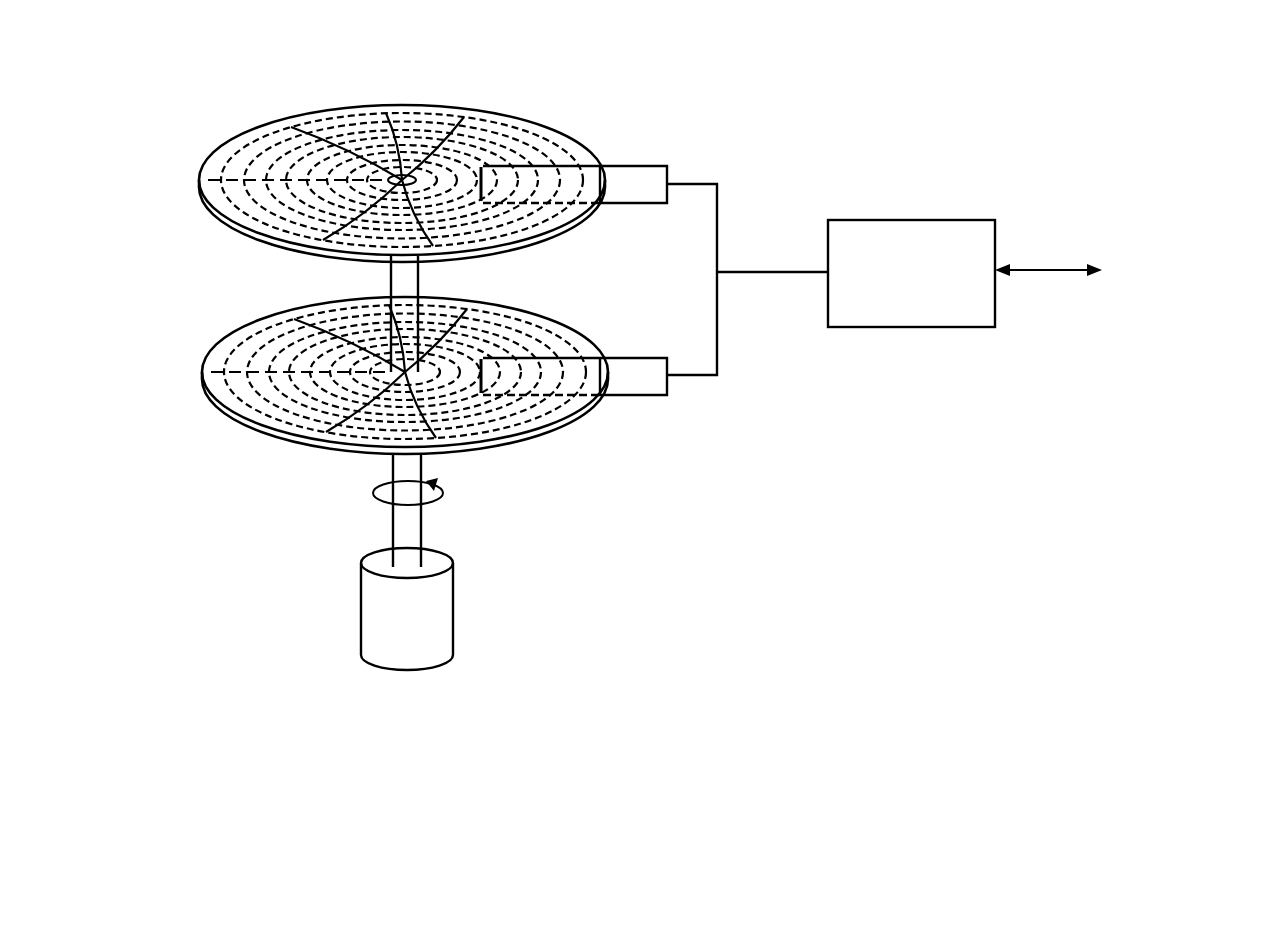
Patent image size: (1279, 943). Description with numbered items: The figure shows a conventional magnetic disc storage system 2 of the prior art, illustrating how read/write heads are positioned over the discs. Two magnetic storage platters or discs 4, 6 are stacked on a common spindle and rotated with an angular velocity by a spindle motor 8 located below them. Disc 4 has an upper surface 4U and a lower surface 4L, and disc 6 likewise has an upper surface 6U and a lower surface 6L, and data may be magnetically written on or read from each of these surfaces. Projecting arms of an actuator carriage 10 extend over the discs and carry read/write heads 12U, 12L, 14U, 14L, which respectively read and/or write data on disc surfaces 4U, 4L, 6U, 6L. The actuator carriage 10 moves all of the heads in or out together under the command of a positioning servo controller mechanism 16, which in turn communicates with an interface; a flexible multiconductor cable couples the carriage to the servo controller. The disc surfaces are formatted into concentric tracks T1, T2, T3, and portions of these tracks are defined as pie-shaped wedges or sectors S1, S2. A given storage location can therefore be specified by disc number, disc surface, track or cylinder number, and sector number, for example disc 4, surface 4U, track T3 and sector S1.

The magnetic disc storage system 2 is at (790, 52).
The magnetic storage disc 4 is at (370, 149).
The upper surface of disc 4 4U is at (370, 161).
The lower surface of disc 4 4L is at (246, 232).
The magnetic storage disc 6 is at (389, 351).
The upper surface of disc 6 6U is at (236, 335).
The lower surface of disc 6 6L is at (241, 425).
The spindle motor 8 is at (352, 608).
The actuator carriage 10 is at (730, 397).
The read/write head 12U is at (497, 163).
The read/write head 12L is at (493, 210).
The read/write head 14U is at (497, 356).
The read/write head 14L is at (497, 400).
The positioning servo controller mechanism 16 is at (905, 218).
The track T1 is at (294, 124).
The track T2 is at (330, 122).
The track T3 is at (365, 118).
The sector S1 is at (198, 213).
The sector S2 is at (231, 120).